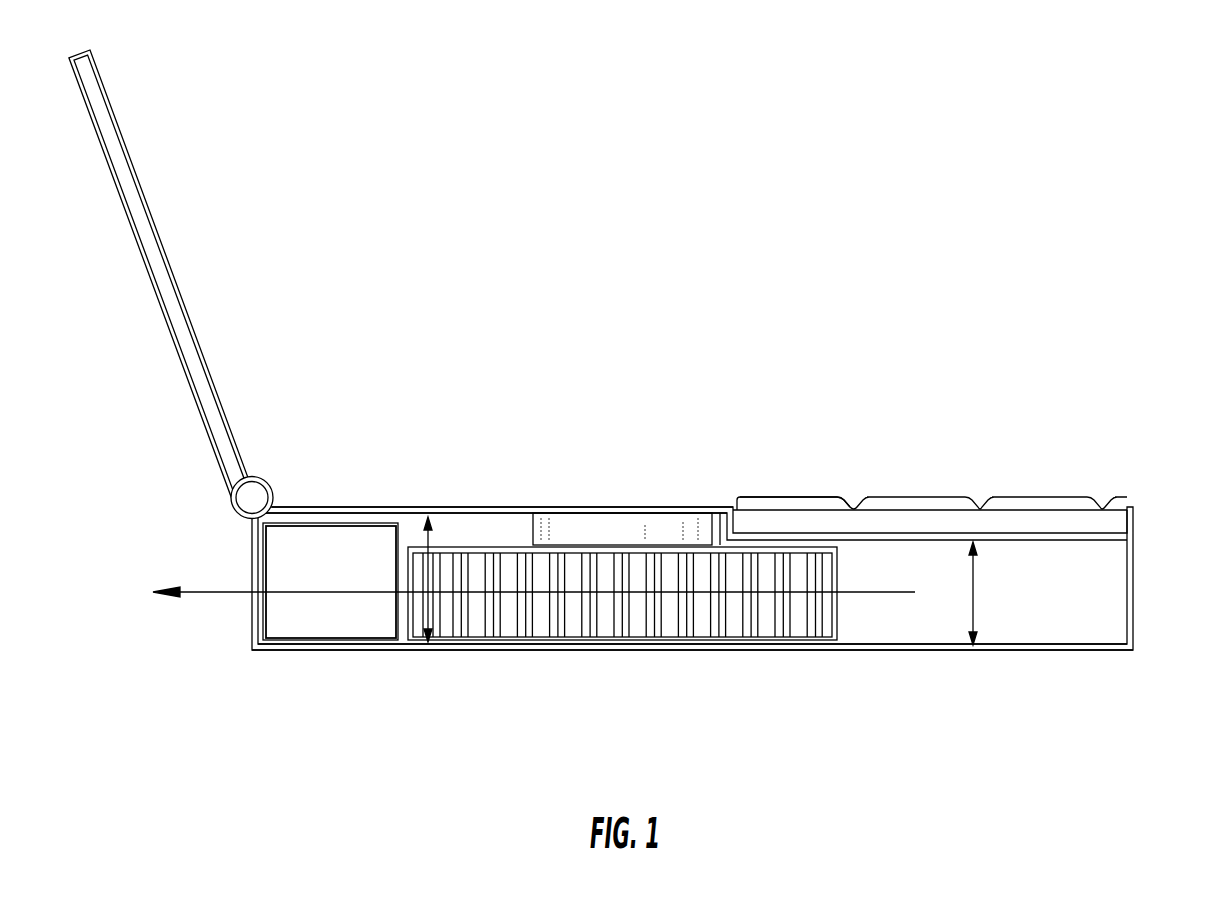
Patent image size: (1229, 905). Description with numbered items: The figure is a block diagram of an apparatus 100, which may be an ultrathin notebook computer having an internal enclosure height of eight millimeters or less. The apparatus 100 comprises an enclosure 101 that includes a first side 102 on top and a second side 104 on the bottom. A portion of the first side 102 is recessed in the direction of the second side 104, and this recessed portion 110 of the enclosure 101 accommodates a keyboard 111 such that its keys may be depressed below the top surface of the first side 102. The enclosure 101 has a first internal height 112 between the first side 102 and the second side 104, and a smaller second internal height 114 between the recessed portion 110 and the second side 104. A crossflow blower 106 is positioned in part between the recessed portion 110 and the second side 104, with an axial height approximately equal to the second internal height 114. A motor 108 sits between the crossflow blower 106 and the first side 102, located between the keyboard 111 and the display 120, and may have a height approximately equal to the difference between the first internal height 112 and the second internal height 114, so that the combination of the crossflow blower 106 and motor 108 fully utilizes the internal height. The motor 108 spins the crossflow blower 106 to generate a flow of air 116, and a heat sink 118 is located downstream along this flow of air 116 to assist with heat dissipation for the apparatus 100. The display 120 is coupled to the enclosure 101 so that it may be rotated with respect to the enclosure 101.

The apparatus 100 is at (1053, 339).
The enclosure 101 is at (1134, 560).
The first side 102 is at (388, 505).
The second side 104 is at (840, 652).
The crossflow blower 106 is at (647, 608).
The motor 108 is at (587, 528).
The recessed portion 110 is at (1025, 523).
The keyboard 111 is at (810, 495).
The first internal height 112 is at (433, 602).
The second internal height 114 is at (973, 603).
The flow of air 116 is at (210, 595).
The heat sink 118 is at (305, 617).
The display 120 is at (200, 352).